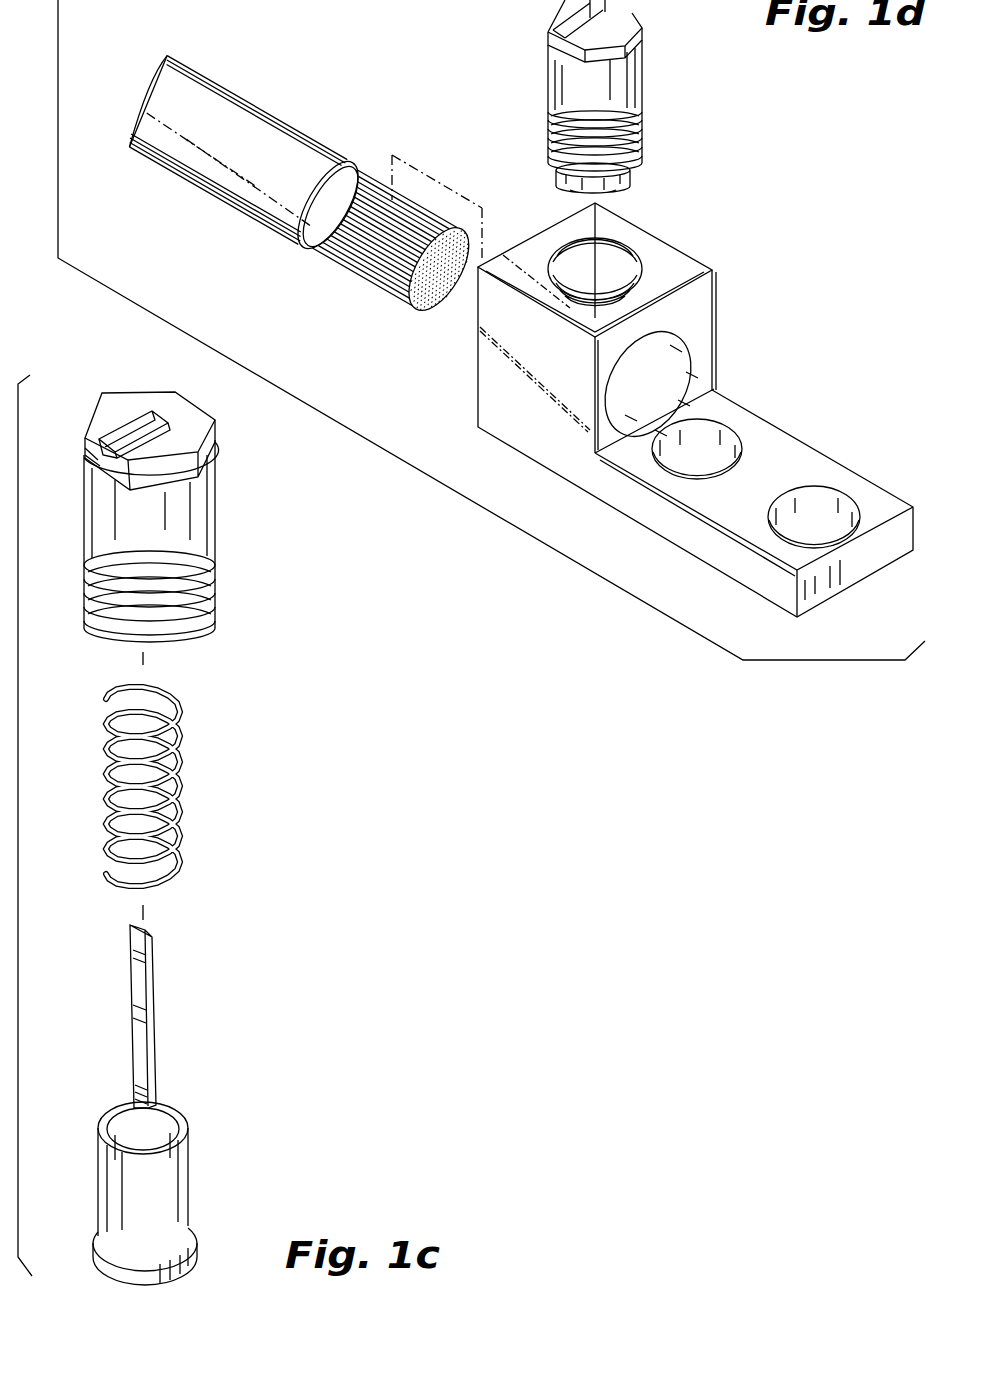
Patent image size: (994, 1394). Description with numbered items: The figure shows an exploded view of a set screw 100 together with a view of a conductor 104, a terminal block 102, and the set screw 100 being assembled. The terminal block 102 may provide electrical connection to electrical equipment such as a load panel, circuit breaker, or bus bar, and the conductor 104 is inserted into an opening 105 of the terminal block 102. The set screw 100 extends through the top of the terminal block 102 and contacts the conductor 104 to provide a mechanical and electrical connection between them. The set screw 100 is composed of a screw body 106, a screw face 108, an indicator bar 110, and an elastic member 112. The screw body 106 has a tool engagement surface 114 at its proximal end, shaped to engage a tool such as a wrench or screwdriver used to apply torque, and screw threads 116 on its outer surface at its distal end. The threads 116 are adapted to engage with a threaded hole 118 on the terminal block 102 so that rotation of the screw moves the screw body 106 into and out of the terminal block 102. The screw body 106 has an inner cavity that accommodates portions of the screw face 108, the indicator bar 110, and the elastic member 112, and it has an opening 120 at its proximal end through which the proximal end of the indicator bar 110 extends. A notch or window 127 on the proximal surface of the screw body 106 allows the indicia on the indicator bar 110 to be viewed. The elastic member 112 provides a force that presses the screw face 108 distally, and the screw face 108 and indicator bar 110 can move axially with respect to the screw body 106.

In FIG. 1D, the set screw 100 is at (527, 92).
In FIG. 1C, the set screw 100 is at (290, 718).
In FIG. 1D, the terminal block 102 is at (790, 405).
In FIG. 1D, the conductor 104 is at (362, 277).
In FIG. 1D, the opening 105 is at (662, 367).
In FIG. 1D, the threaded hole 118 is at (573, 277).
In FIG. 1C, the screw body 106 is at (213, 516).
In FIG. 1C, the screw face 108 is at (100, 1180).
In FIG. 1C, the indicator bar 110 is at (137, 1063).
In FIG. 1C, the elastic member 112 is at (105, 783).
In FIG. 1C, the tool engagement surface 114 is at (213, 440).
In FIG. 1C, the screw threads 116 is at (218, 580).
In FIG. 1C, the opening 120 is at (145, 408).
In FIG. 1C, the notch or window 127 is at (86, 456).